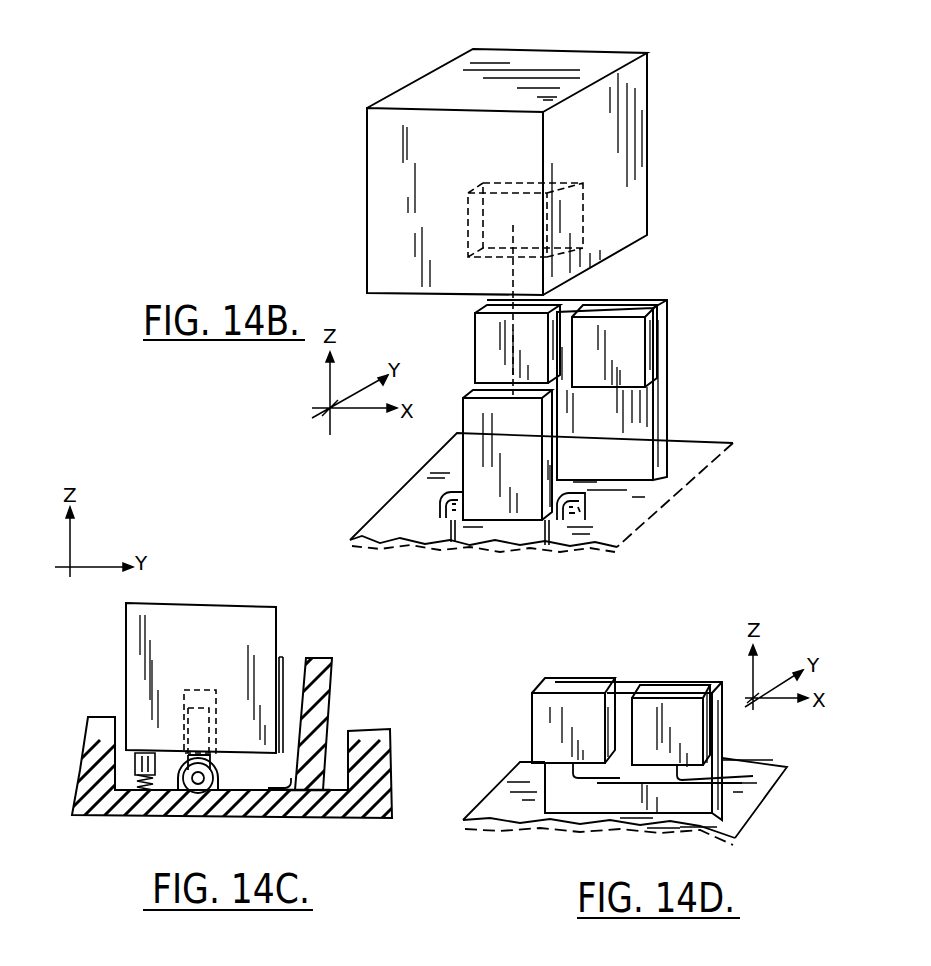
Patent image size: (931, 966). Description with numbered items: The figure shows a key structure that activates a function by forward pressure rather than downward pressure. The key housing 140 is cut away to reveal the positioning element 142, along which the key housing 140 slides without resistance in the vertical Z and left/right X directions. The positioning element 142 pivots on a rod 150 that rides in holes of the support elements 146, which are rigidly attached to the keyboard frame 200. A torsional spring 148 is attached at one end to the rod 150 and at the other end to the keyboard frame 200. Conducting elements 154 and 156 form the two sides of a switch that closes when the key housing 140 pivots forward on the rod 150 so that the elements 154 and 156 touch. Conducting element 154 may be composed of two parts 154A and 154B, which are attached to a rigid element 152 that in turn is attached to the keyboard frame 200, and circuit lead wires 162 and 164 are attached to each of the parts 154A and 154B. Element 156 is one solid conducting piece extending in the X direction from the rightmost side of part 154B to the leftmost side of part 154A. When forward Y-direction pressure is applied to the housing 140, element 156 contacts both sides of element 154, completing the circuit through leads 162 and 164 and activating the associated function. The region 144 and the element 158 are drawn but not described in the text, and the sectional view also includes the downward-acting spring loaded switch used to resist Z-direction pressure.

In FIG. 14B, the key housing 140 is at (610, 62).
In FIG. 14C, the key housing 140 is at (233, 603).
In FIG. 14B, the positioning element 142 is at (547, 437).
In FIG. 14C, the positioning element 142 is at (218, 783).
In FIG. 14B, the cavity / recess 144 is at (583, 215).
In FIG. 14C, the cavity / recess 144 is at (183, 697).
In FIG. 14B, the support elements 146 is at (440, 497).
In FIG. 14C, the support elements 146 is at (182, 787).
In FIG. 14B, the torsional spring 148 is at (453, 518).
In FIG. 14B, the rod 150 is at (543, 520).
In FIG. 14B, the rigid element 152 is at (640, 297).
In FIG. 14C, the rigid element 152 is at (325, 682).
In FIG. 14D, the rigid element 152 is at (640, 688).
In FIG. 14C, the conducting element 154 is at (307, 660).
In FIG. 14B, the conducting element part 154A is at (490, 342).
In FIG. 14D, the conducting element part 154A is at (542, 718).
In FIG. 14B, the conducting element part 154B is at (632, 345).
In FIG. 14D, the conducting element part 154B is at (692, 733).
In FIG. 14C, the conducting element 156 is at (281, 657).
In FIG. 14C, the bolt 158 is at (135, 785).
In FIG. 14C, the circuit lead wire 162 is at (268, 788).
In FIG. 14D, the circuit lead wire 162 is at (750, 773).
In FIG. 14C, the circuit lead wire 164 is at (292, 790).
In FIG. 14D, the circuit lead wire 164 is at (740, 787).
In FIG. 14B, the keyboard frame 200 is at (630, 527).
In FIG. 14C, the keyboard frame 200 is at (100, 717).
In FIG. 14D, the keyboard frame 200 is at (720, 827).